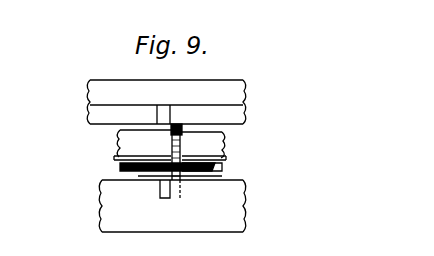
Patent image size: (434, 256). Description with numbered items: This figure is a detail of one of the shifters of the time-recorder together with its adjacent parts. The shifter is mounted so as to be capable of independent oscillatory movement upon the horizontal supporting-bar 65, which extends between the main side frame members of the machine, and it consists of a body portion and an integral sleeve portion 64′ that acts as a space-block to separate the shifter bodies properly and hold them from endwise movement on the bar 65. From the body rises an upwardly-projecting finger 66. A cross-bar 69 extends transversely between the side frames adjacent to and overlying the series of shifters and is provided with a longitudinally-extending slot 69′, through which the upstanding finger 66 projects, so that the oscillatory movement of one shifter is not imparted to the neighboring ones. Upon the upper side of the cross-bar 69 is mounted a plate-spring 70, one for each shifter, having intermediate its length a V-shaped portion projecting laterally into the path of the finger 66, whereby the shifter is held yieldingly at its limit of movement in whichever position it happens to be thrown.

The sleeve portion 64′ is at (118, 141).
The finger 66 is at (182, 128).
The slot 69′ is at (223, 135).
The supporting-bar 65 is at (224, 158).
The plate-spring 70 is at (166, 157).
The cross-bar 69 is at (172, 206).